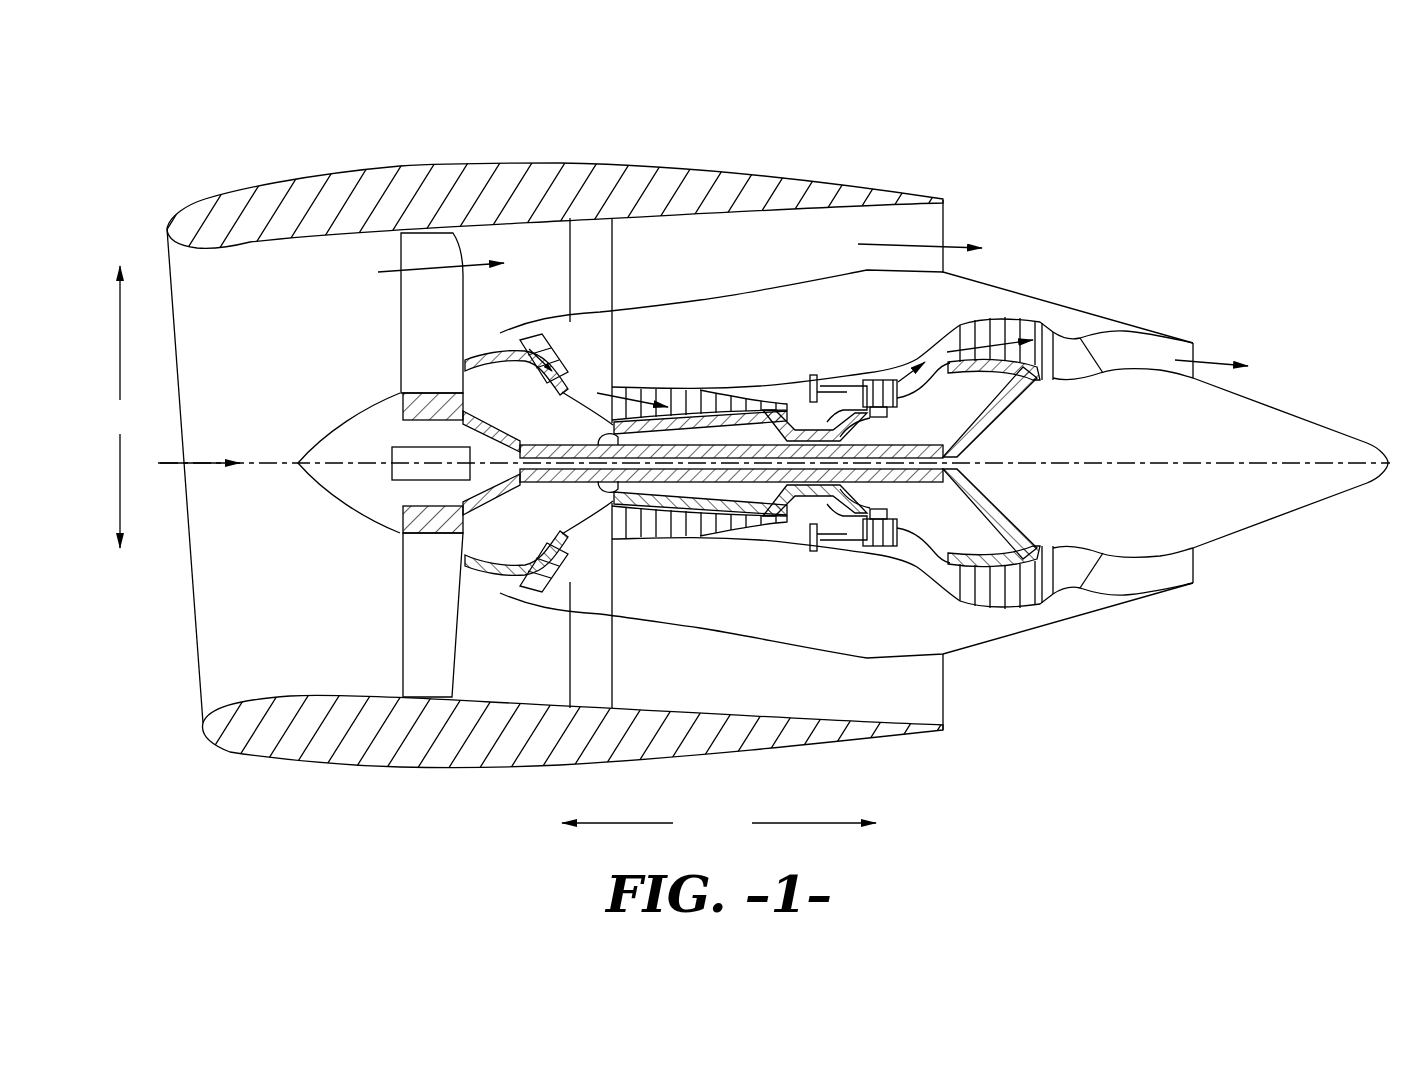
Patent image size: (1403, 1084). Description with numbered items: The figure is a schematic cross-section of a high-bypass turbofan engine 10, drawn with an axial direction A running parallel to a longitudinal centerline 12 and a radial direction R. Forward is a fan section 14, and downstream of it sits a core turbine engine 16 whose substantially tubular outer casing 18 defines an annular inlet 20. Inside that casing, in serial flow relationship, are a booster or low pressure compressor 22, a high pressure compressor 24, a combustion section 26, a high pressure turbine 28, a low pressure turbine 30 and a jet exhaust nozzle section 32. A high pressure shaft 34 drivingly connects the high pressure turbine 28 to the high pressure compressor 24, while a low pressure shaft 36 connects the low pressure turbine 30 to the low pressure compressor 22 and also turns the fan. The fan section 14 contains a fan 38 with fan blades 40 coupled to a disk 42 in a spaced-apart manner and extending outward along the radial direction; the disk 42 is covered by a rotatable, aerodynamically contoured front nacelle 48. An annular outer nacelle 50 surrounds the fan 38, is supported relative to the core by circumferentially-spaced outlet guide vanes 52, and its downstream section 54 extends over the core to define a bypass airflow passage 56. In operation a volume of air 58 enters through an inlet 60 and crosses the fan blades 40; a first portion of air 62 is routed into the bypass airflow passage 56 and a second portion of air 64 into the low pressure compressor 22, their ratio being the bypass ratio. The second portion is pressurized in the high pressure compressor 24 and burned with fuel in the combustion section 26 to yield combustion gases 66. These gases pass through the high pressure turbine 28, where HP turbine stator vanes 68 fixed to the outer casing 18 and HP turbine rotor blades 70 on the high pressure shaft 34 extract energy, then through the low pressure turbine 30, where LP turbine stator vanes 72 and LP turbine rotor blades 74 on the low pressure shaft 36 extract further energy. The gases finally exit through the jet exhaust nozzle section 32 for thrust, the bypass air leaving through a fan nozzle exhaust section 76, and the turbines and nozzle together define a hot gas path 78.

The turbofan engine 10 is at (1182, 230).
The longitudinal centerline 12 is at (1112, 462).
The fan section 14 is at (478, 147).
The core turbine engine 16 is at (773, 345).
The outer casing 18 is at (798, 647).
The annular inlet 20 is at (518, 584).
The low pressure compressor 22 is at (570, 553).
The high pressure compressor 24 is at (643, 537).
The combustion section 26 is at (830, 530).
The high pressure turbine 28 is at (905, 545).
The low pressure turbine 30 is at (1040, 613).
The jet exhaust nozzle section 32 is at (1196, 350).
The high pressure shaft 34 is at (880, 413).
The low pressure shaft 36 is at (570, 448).
The fan 38 is at (388, 314).
The fan blades 40 is at (400, 642).
The disk 42 is at (400, 407).
The front nacelle 48 is at (324, 438).
The outer nacelle 50 is at (467, 767).
The outlet guide vanes 52 is at (612, 241).
The downstream section 54 is at (763, 171).
The bypass airflow passage 56 is at (722, 262).
The volume of air 58 is at (200, 461).
The inlet 60 is at (200, 683).
The first portion of air 62 is at (412, 268).
The second portion of air 64 is at (484, 343).
The combustion gases 66 is at (992, 325).
The HP turbine stator vanes 68 is at (867, 553).
The HP turbine rotor blades 70 is at (880, 545).
The LP turbine stator vanes 72 is at (950, 580).
The LP turbine rotor blades 74 is at (960, 592).
The fan nozzle exhaust section 76 is at (943, 225).
The hot gas path 78 is at (931, 350).